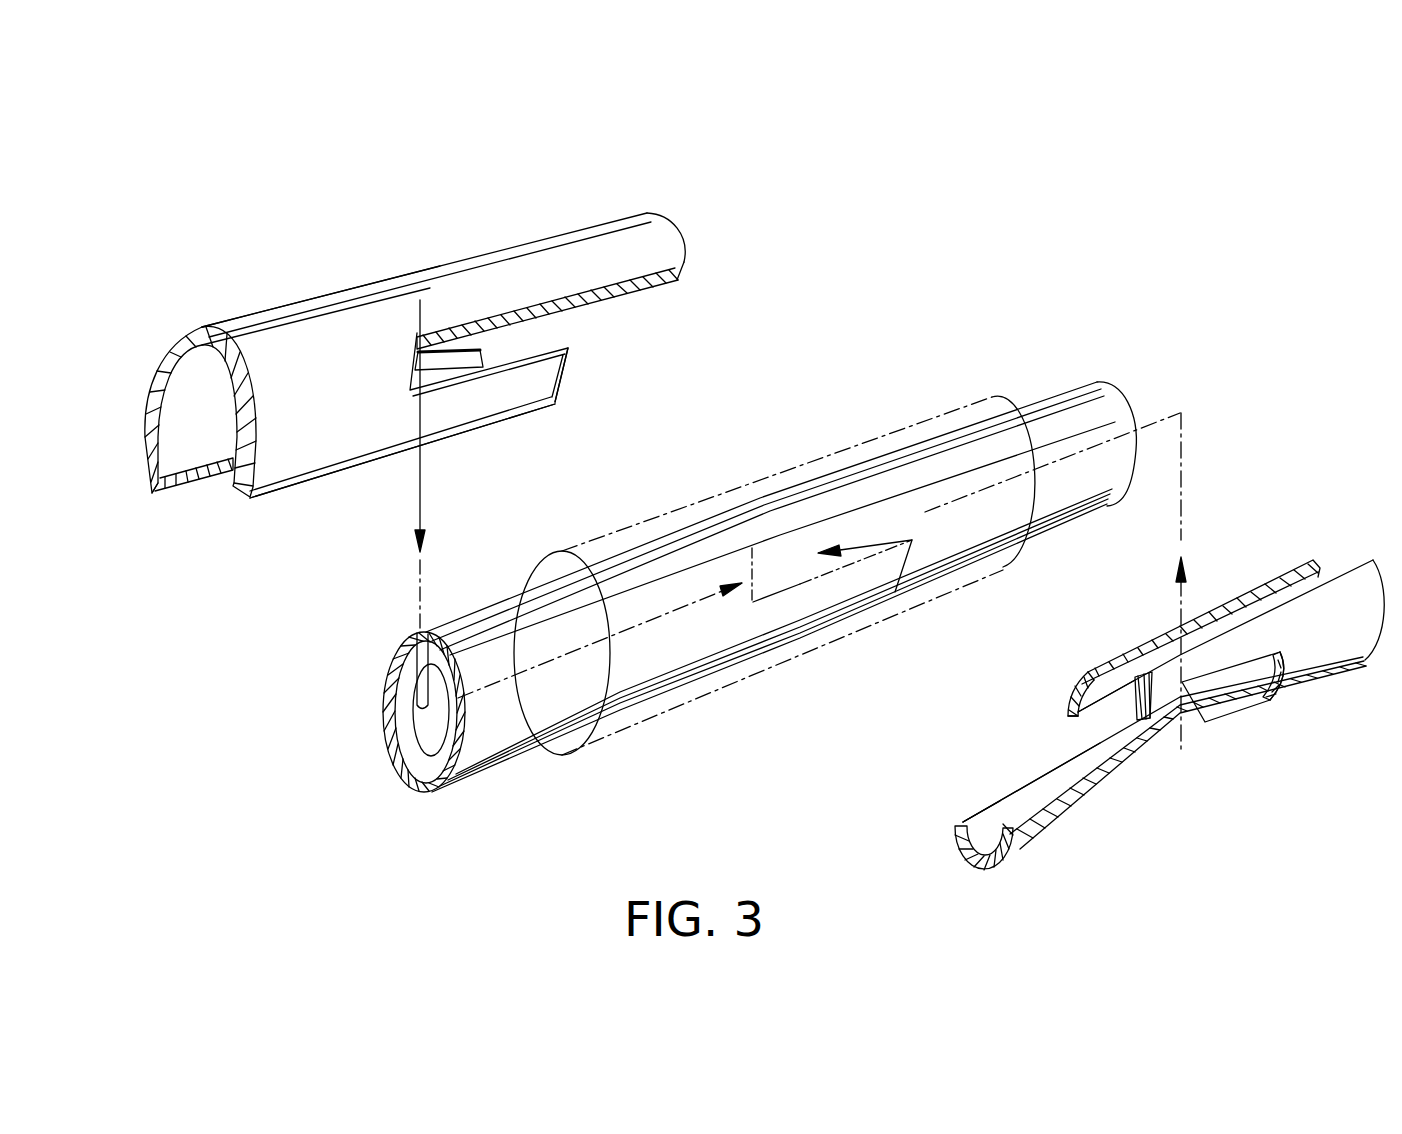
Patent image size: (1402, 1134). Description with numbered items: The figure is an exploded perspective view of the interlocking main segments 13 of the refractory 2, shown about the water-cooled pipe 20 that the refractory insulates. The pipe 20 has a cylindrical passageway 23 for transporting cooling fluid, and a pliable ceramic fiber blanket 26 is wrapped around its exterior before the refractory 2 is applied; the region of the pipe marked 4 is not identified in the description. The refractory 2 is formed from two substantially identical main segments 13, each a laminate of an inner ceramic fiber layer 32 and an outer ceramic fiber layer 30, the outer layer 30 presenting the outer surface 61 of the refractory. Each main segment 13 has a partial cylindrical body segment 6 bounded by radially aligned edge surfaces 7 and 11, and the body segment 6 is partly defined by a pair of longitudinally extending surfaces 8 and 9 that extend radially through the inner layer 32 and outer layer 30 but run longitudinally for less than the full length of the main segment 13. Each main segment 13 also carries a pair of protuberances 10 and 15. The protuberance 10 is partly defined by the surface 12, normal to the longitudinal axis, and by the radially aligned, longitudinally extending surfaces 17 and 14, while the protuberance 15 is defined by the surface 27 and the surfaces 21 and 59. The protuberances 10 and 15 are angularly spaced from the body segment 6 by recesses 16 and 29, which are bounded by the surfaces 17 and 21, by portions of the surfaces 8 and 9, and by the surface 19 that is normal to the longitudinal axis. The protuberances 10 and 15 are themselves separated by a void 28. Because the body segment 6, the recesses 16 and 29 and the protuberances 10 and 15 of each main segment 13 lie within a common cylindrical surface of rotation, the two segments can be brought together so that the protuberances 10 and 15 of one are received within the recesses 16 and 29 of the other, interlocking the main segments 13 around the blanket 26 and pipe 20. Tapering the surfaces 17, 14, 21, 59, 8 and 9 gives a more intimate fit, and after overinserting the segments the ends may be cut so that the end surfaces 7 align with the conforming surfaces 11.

The refractory 2 is at (773, 653).
The tube end portion 4 is at (1127, 410).
The partial cylindrical body segment 6 is at (686, 263).
The radially aligned edge surface 7 is at (683, 247).
The longitudinally extending surface 8 is at (668, 279).
The longitudinally extending surface 9 is at (985, 808).
The protuberance 10 is at (1192, 678).
The radially aligned edge surface 11 is at (166, 357).
The surface normal to the longitudinal axis 12 is at (1143, 722).
The main segment 13 is at (431, 264).
The radially aligned longitudinally extending surface 14 is at (547, 410).
The protuberance 15 is at (1088, 690).
The recess 16 is at (508, 342).
The radially aligned longitudinally extending surface 17 is at (570, 348).
The surface normal to the longitudinal axis 19 is at (1278, 692).
The water-cooled pipe 20 is at (393, 763).
The radially aligned longitudinally extending surface 21 is at (1114, 706).
The cylindrical passageway 23 is at (420, 726).
The ceramic fiber blanket 26 is at (428, 794).
The surface normal to the longitudinal axis 27 is at (1085, 675).
The void 28 is at (216, 484).
The recess 29 is at (1095, 750).
The outer ceramic fiber layer 30 is at (1118, 661).
The inner ceramic fiber layer 32 is at (1068, 710).
The radially aligned longitudinally extending surface 59 is at (177, 492).
The outer surface 61 is at (236, 315).